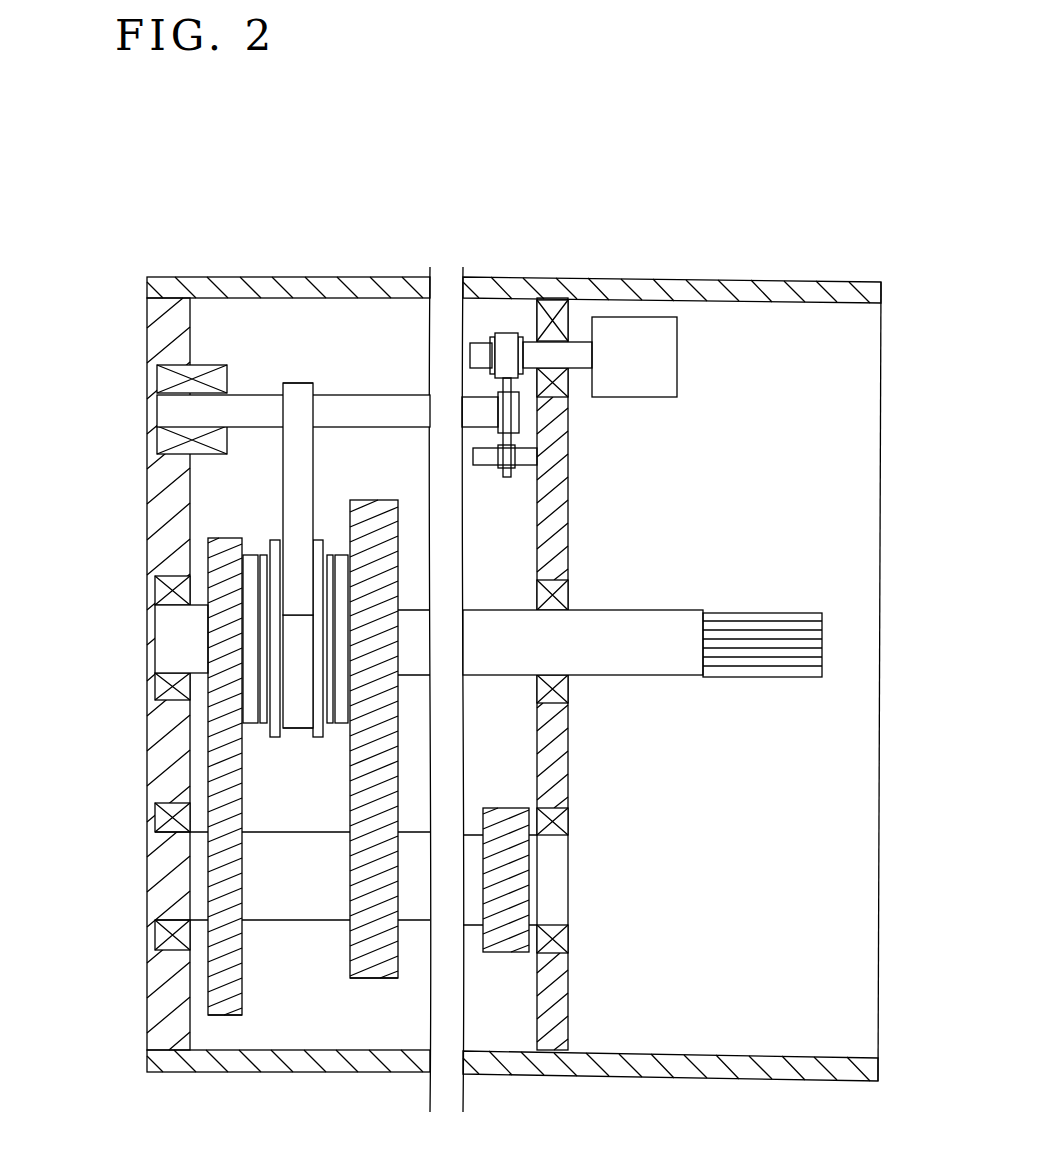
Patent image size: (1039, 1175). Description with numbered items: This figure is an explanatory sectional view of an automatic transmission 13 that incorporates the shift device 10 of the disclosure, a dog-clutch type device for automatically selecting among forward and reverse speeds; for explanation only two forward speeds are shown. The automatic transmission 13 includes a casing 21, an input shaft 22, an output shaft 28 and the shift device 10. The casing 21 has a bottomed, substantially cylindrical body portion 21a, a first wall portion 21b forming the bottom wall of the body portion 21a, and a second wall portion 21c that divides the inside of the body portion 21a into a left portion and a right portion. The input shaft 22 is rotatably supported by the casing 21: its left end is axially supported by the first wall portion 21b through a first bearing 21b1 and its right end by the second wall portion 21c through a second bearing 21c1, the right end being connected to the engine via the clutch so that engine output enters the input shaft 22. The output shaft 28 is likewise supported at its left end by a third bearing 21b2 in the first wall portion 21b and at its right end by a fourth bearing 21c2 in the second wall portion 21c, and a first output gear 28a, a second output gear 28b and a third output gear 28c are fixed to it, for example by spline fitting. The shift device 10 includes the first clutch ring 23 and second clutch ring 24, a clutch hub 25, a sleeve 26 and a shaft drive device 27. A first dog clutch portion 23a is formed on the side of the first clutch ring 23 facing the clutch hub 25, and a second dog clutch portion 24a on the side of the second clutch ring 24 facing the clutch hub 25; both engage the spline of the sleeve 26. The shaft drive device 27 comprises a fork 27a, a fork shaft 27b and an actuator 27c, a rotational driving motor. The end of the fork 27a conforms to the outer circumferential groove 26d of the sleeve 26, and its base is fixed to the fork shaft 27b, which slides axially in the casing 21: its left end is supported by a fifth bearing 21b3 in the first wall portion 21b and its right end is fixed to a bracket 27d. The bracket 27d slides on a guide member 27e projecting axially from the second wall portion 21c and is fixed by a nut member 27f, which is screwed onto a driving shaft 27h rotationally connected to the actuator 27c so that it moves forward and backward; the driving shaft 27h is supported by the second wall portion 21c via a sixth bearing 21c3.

The shift device 10 is at (248, 163).
The automatic transmission 13 is at (710, 150).
The casing 21 is at (737, 262).
The body portion 21a is at (520, 277).
The first wall portion 21b is at (145, 507).
The first bearing 21b1 is at (158, 588).
The third bearing 21b2 is at (160, 933).
The fifth bearing 21b3 is at (165, 378).
The second wall portion 21c is at (567, 535).
The second bearing 21c1 is at (563, 597).
The fourth bearing 21c2 is at (567, 933).
The sixth bearing 21c3 is at (582, 318).
The input shaft 22 is at (633, 677).
The first clutch ring 23 is at (349, 745).
The first dog clutch portion 23a is at (338, 554).
The second clutch ring 24 is at (210, 720).
The second dog clutch portion 24a is at (250, 554).
The clutch hub 25 is at (266, 642).
The sleeve 26 is at (282, 680).
The outer circumferential groove 26d is at (278, 681).
The shaft drive device 27 is at (320, 368).
The fork 27a is at (281, 467).
The fork shaft 27b is at (387, 395).
The actuator 27c is at (665, 335).
The bracket 27d is at (507, 478).
The guide member 27e is at (480, 465).
The nut member 27f is at (506, 345).
The driving shaft 27h is at (578, 357).
The output shaft 28 is at (292, 921).
The first output gear 28a is at (376, 979).
The second output gear 28b is at (218, 1016).
The third output gear 28c is at (505, 953).